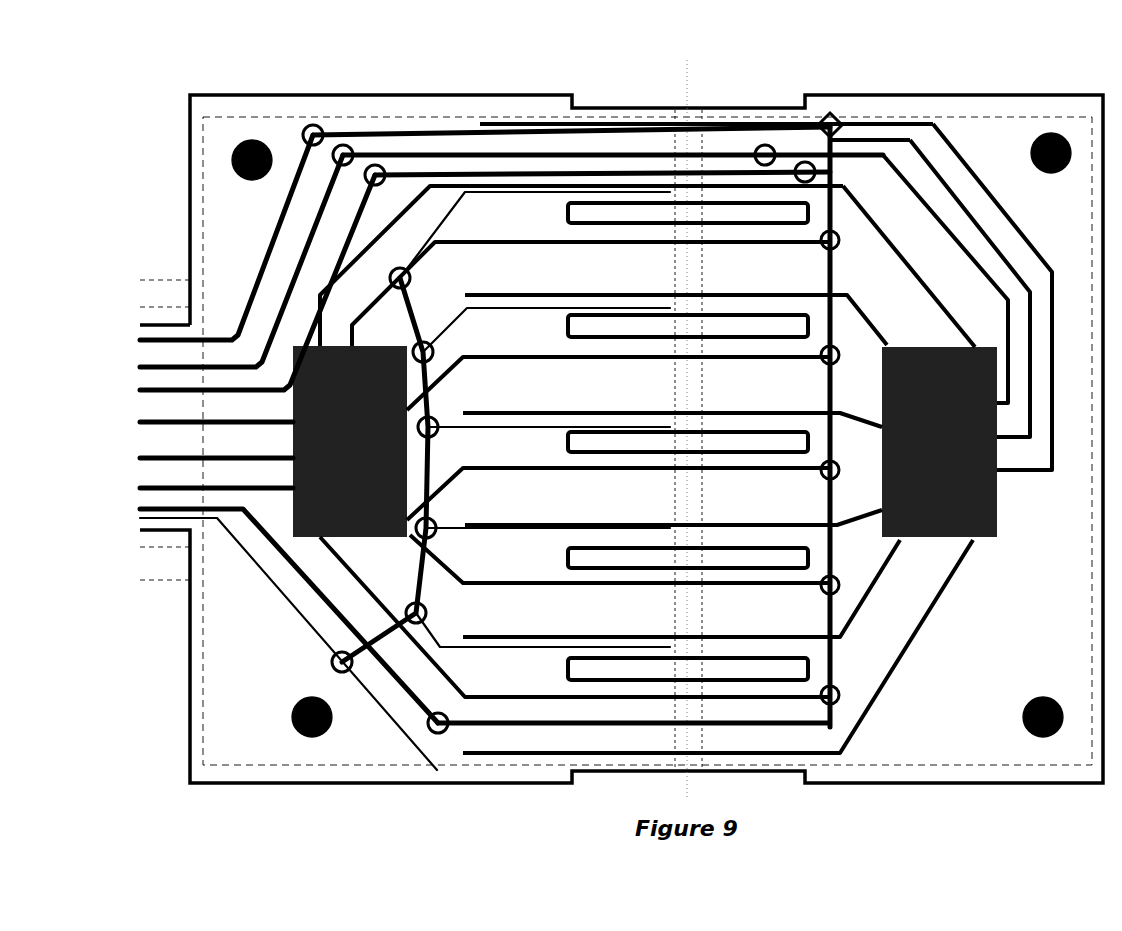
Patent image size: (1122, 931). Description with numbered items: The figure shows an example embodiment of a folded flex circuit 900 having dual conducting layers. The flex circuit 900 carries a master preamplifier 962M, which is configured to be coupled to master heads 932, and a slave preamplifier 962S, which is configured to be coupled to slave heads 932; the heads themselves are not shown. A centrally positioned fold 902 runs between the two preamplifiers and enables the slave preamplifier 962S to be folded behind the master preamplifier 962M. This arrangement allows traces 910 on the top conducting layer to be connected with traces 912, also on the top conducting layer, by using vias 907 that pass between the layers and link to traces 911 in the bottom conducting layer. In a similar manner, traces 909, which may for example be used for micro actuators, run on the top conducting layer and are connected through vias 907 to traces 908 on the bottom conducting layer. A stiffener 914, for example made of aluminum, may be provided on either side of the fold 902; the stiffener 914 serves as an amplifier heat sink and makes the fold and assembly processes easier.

The folded flex circuit 900 is at (940, 76).
The fold 902 is at (690, 95).
The vias 907 is at (313, 125).
The traces 908 is at (362, 655).
The traces 909 is at (307, 587).
The traces 910 is at (250, 330).
The traces 911 is at (405, 172).
The traces 912 is at (1003, 300).
The stiffener 914 is at (958, 120).
The heads 932 is at (646, 420).
The master preamplifier 962M is at (340, 540).
The slave preamplifier 962S is at (985, 540).